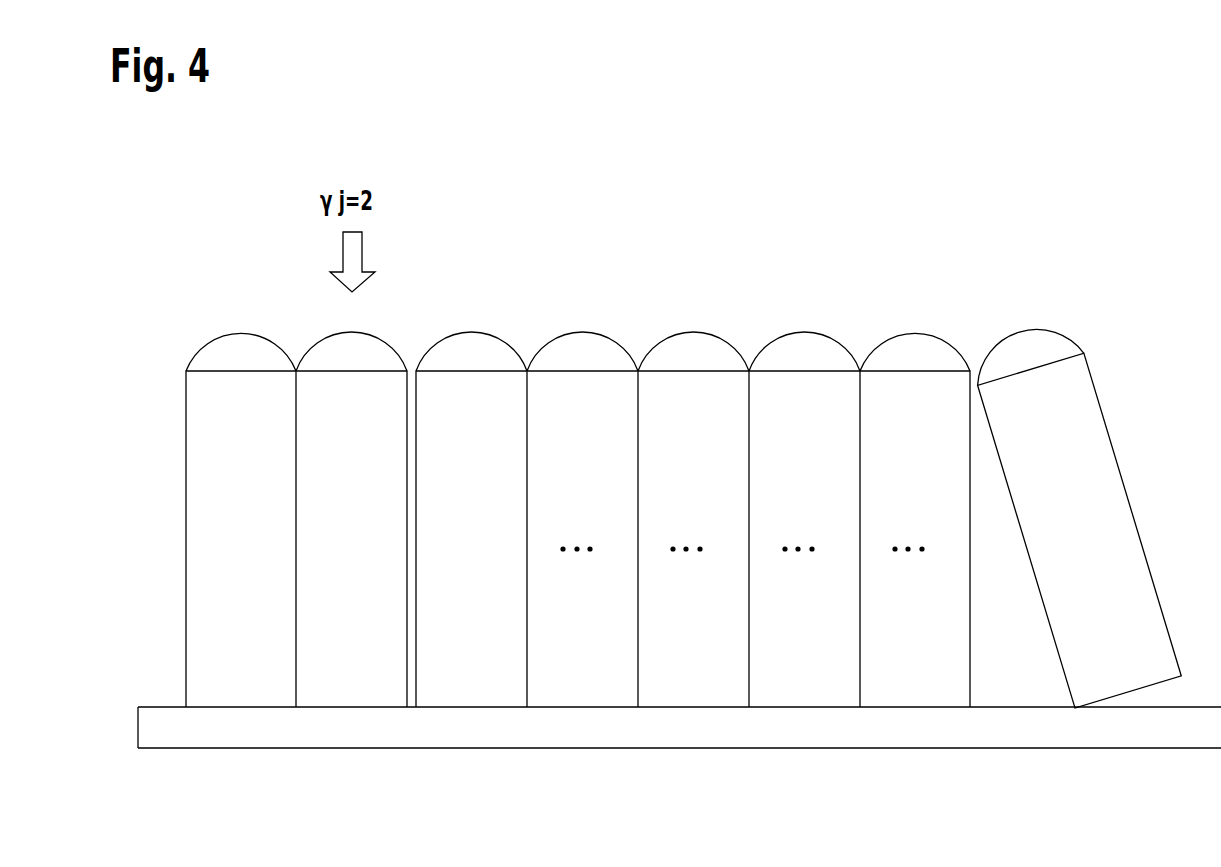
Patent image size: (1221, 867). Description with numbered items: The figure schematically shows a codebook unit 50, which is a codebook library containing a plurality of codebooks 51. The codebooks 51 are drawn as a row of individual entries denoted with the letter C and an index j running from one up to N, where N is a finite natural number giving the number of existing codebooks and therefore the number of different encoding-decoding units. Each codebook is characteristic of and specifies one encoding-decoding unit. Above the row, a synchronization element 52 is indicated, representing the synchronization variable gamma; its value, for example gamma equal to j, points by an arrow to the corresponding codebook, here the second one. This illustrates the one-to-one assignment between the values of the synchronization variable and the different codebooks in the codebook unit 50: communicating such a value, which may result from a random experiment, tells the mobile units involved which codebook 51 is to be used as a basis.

The codebook unit 50 is at (1105, 181).
The codebook 51 is at (470, 400).
The synchronization element 52 is at (222, 183).